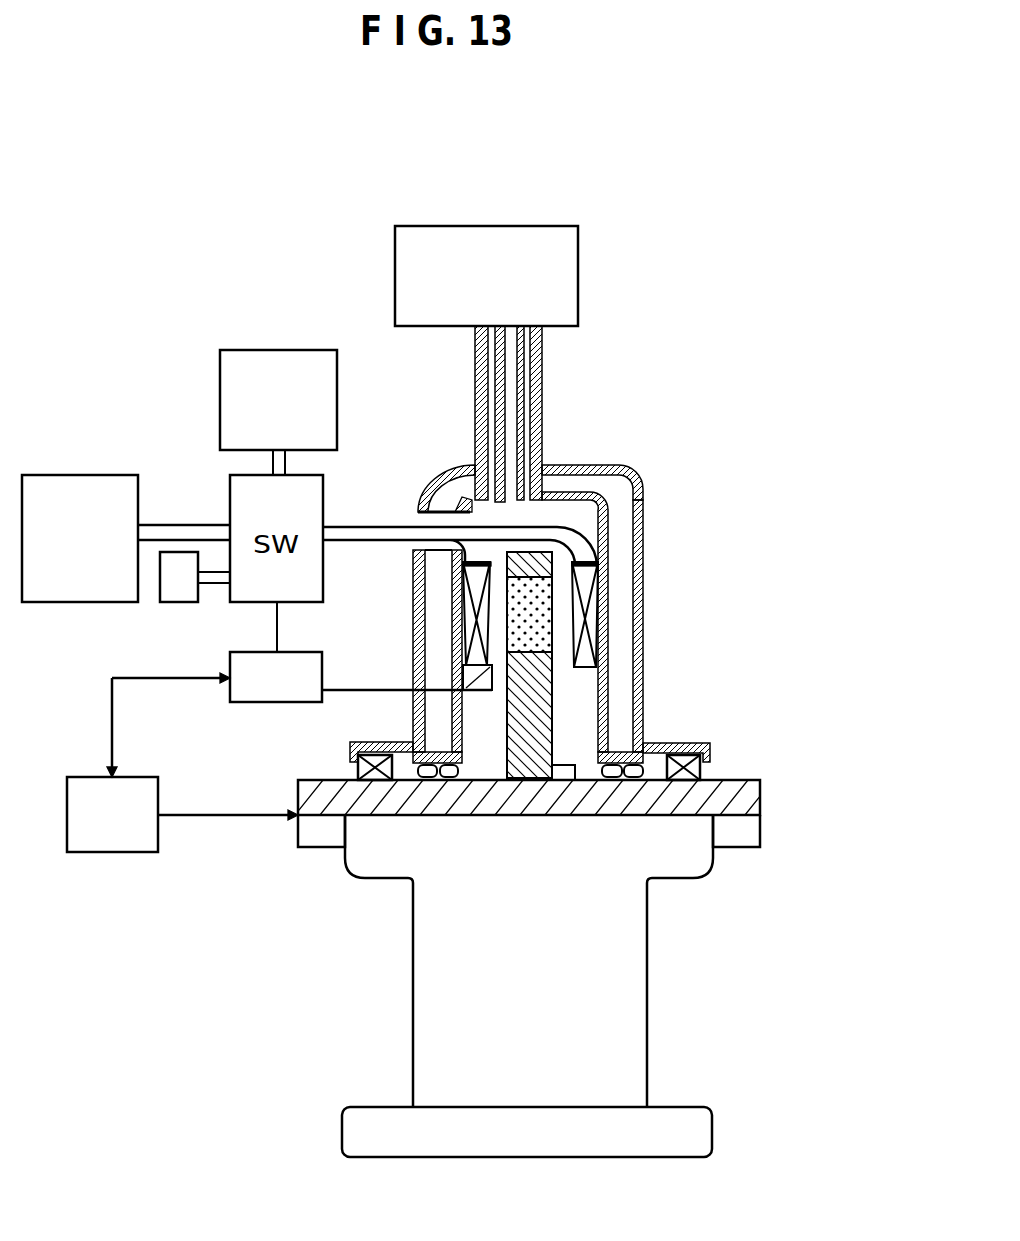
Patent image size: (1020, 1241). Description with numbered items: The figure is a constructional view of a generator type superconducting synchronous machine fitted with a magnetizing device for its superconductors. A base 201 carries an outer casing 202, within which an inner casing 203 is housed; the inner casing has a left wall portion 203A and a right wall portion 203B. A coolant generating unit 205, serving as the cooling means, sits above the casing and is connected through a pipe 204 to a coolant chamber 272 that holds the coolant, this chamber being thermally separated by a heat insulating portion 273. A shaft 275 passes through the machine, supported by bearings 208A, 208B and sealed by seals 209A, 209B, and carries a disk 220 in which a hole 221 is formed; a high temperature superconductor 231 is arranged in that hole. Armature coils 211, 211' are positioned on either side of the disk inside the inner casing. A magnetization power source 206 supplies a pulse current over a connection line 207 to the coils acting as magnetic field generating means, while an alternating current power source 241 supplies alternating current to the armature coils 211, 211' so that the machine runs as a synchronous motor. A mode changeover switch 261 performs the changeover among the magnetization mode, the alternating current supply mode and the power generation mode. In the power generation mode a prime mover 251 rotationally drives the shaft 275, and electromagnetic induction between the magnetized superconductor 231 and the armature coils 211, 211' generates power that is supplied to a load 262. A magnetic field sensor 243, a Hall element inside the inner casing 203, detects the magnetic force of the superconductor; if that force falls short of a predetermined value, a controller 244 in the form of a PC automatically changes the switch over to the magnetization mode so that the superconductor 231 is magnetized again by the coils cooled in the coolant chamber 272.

The base 201 is at (712, 1128).
The outer casing 202 is at (643, 504).
The inner casing 203 is at (630, 484).
The left inner vessel wall 203A is at (415, 655).
The right outer vessel wall 203B is at (643, 660).
The pipe 204 is at (543, 378).
The coolant generating unit 205 is at (553, 226).
The magnetization power source 206 is at (92, 476).
The connection line 207 is at (152, 525).
The bearing 208A is at (703, 772).
The bearing 208B is at (352, 772).
The seal 209A is at (622, 778).
The seal 209B is at (437, 780).
The armature coil 211 is at (636, 614).
The armature coil 211' is at (418, 613).
The disk 220 is at (553, 703).
The hole 221 is at (500, 580).
The superconductor 231 is at (552, 590).
The alternating current power source 241 is at (337, 378).
The magnetic field sensor 243 is at (482, 690).
The controller 244 is at (250, 652).
The prime mover 251 is at (137, 776).
The mode changeover switch 261 is at (324, 500).
The load 262 is at (170, 602).
The coolant chamber 272 is at (572, 727).
The heat insulating portion 273 is at (565, 486).
The shaft 275 is at (760, 802).